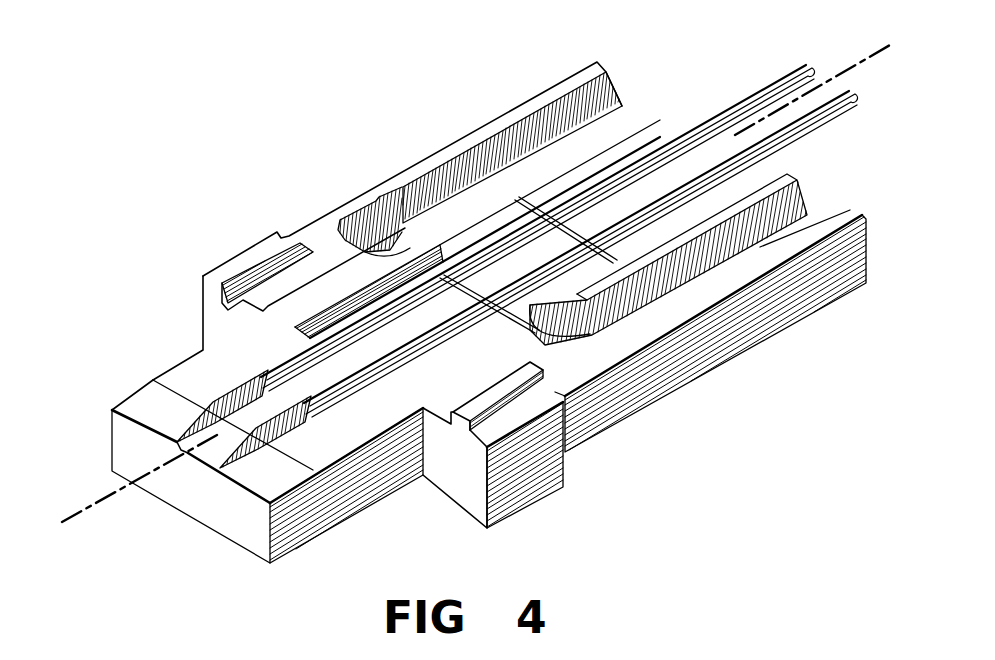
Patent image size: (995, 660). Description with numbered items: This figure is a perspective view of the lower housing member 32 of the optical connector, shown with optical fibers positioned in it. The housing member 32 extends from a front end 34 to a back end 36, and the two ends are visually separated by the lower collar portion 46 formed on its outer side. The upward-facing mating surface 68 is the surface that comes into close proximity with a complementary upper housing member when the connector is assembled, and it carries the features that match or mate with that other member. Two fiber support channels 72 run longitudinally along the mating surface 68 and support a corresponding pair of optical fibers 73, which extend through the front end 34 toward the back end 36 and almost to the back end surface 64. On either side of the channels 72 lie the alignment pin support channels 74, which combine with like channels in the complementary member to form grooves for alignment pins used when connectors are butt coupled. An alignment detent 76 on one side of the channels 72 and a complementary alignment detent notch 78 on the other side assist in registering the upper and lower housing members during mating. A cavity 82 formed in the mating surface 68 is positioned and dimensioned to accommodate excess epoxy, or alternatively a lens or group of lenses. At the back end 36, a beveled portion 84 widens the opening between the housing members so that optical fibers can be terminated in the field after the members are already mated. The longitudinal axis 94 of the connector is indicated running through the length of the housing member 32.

The lower housing member 32 is at (276, 127).
The front end 34 is at (713, 362).
The back end 36 is at (347, 510).
The lower collar portion 46 is at (527, 502).
The back end surface 64 is at (193, 504).
The mating surface 68 is at (190, 363).
The fiber support channels 72 is at (258, 440).
The optical fibers 73 is at (737, 157).
The alignment pin support channels 74 is at (640, 100).
The alignment detent 76 is at (487, 400).
The alignment detent notch 78 is at (260, 272).
The cavity 82 is at (357, 312).
The beveled portion 84 is at (137, 397).
The longitudinal axis 94 is at (100, 493).